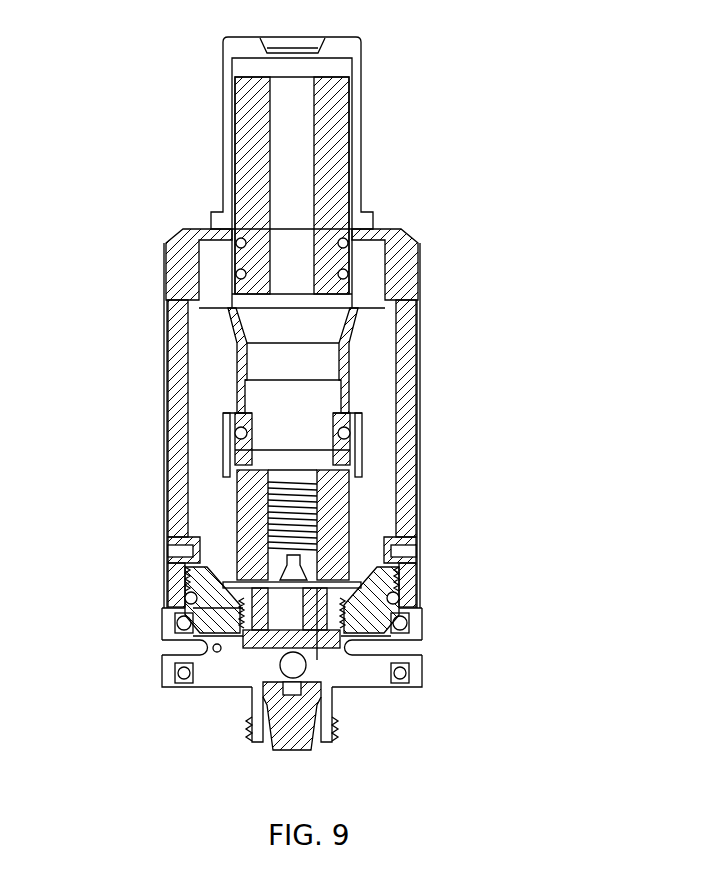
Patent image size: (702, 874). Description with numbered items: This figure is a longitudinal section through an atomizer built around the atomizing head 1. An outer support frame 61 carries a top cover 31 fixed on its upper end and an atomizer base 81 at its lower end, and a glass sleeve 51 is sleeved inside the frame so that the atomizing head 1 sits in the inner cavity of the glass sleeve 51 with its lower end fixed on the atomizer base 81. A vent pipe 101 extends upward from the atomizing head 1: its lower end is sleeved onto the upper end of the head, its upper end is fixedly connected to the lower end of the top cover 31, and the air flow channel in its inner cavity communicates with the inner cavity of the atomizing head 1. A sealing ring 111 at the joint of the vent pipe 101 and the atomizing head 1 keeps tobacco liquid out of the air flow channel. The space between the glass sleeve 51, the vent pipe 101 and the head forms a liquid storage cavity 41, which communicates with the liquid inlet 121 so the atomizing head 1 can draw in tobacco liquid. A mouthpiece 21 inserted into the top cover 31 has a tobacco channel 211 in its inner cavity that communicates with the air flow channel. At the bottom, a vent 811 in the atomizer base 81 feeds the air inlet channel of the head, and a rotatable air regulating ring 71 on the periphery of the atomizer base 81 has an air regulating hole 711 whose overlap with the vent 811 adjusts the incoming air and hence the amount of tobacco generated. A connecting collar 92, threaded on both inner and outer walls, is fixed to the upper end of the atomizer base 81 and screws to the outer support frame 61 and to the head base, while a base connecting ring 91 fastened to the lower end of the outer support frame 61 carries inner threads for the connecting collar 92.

The atomizing head 1 is at (343, 653).
The mouthpiece 21 is at (247, 183).
The tobacco channel 211 is at (295, 210).
The top cover 31 is at (180, 237).
The liquid storage cavity 41 is at (202, 355).
The glass sleeve 51 is at (165, 410).
The outer support frame 61 is at (166, 532).
The air regulating ring 71 is at (168, 628).
The air regulating hole 711 is at (415, 647).
The atomizer base 81 is at (170, 680).
The vent 811 is at (172, 645).
The base connecting ring 91 is at (418, 567).
The connecting collar 92 is at (398, 610).
The vent pipe 101 is at (350, 390).
The sealing ring 111 is at (349, 425).
The liquid inlet 121 is at (347, 533).